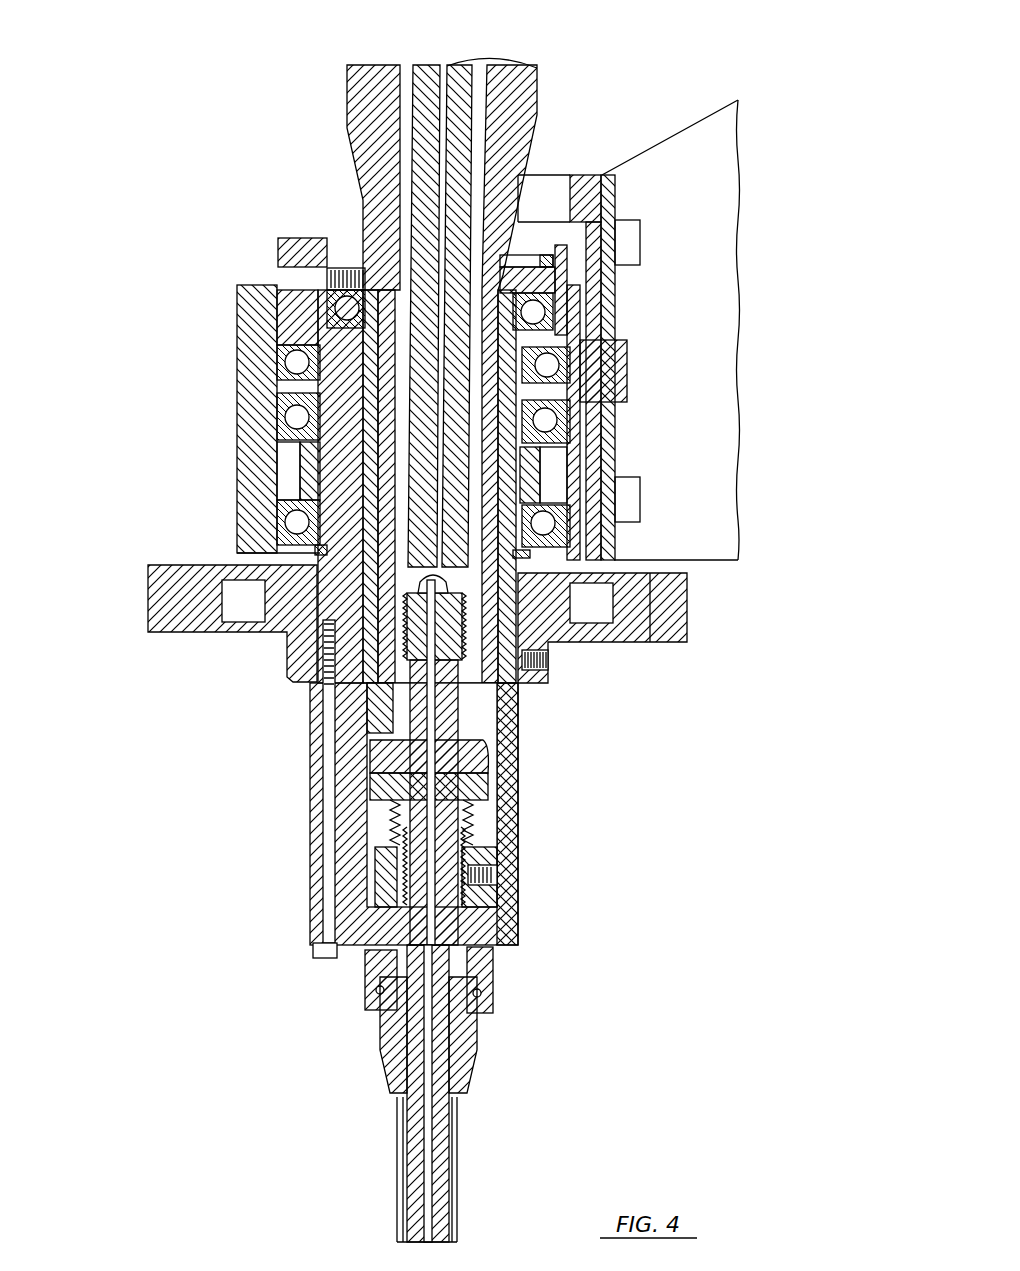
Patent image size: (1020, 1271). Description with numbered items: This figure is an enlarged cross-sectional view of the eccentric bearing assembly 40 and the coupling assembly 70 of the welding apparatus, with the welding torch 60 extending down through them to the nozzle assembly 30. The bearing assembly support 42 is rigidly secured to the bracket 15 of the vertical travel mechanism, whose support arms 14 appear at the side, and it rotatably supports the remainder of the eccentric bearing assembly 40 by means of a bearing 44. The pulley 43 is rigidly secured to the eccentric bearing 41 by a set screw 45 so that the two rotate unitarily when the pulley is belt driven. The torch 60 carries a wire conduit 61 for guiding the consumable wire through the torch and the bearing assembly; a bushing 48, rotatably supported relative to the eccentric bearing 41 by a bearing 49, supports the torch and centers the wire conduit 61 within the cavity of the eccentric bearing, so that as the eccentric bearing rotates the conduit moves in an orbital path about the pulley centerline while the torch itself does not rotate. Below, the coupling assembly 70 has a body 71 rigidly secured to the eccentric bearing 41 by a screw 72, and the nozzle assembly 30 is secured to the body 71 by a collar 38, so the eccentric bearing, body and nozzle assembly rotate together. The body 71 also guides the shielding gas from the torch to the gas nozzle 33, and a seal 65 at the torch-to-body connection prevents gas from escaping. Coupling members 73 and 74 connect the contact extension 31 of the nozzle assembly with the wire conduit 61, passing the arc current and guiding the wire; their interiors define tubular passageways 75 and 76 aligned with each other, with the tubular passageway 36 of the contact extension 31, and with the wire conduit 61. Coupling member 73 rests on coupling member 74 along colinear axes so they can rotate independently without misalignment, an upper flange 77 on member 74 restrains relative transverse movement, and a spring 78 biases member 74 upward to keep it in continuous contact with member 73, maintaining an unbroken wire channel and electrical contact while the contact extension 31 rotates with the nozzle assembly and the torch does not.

The support arms 14 is at (697, 120).
The bracket 15 is at (586, 175).
The nozzle assembly 30 is at (552, 1032).
The contact extension 31 is at (413, 1143).
The gas nozzle 33 is at (458, 1187).
The tubular passageway 36 is at (427, 1143).
The collar 38 is at (365, 995).
The eccentric bearing assembly 40 is at (195, 449).
The eccentric bearing 41 is at (293, 238).
The bearing assembly support 42 is at (240, 330).
The pulley 43 is at (183, 637).
The bearing 44 is at (284, 362).
The set screw 45 is at (548, 662).
The bushing 48 is at (352, 268).
The bearing 49 is at (337, 306).
The welding torch 60 is at (308, 105).
The wire conduit 61 is at (460, 62).
The seal 65 is at (368, 712).
The coupling assembly 70 is at (245, 767).
The body 71 is at (520, 770).
The screw 72 is at (313, 955).
The coupling member 73 is at (457, 684).
The coupling member 74 is at (490, 787).
The tubular passageway 75 is at (497, 728).
The tubular passageway 76 is at (432, 795).
The upper flange 77 is at (377, 742).
The spring 78 is at (473, 815).